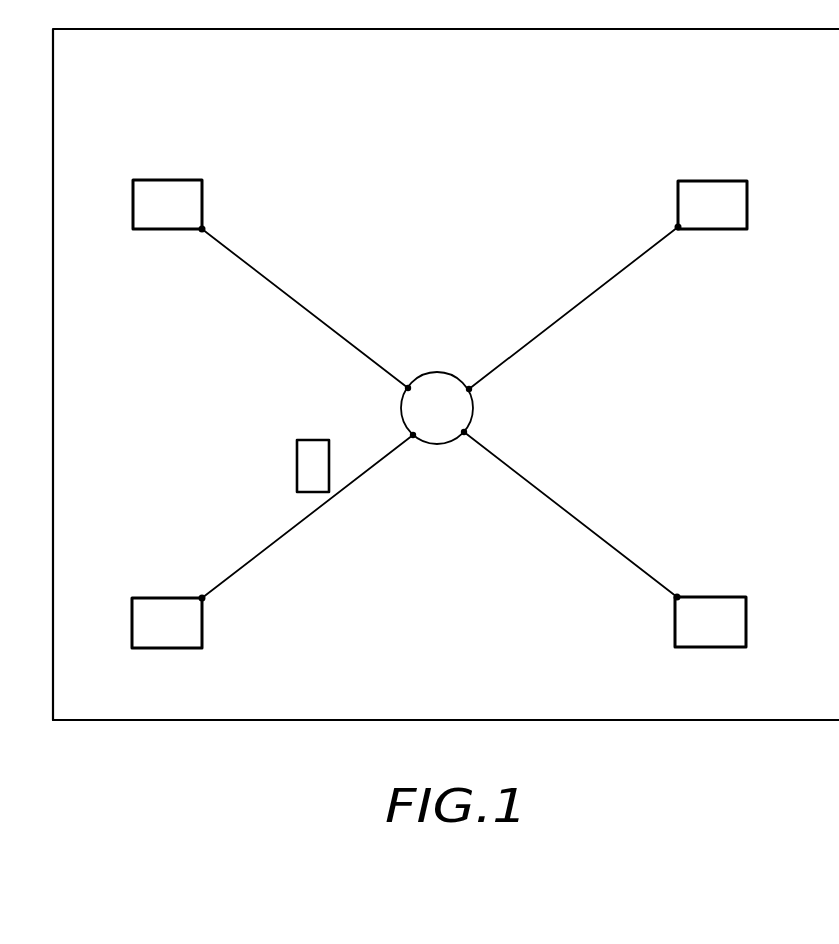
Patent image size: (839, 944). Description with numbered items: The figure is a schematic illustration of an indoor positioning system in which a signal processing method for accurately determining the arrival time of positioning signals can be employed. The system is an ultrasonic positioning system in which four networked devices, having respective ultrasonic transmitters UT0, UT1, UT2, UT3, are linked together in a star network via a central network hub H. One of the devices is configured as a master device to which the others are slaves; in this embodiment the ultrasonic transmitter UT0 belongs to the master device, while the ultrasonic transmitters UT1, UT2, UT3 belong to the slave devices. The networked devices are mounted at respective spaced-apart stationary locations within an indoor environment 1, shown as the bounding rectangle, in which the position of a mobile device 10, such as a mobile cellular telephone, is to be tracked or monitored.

The indoor environment 1 is at (657, 700).
The central network hub H is at (437, 380).
The mobile device 10 is at (329, 470).
The ultrasonic transmitter UT0 is at (133, 204).
The ultrasonic transmitter UT1 is at (747, 208).
The ultrasonic transmitter UT2 is at (746, 605).
The ultrasonic transmitter UT3 is at (132, 606).